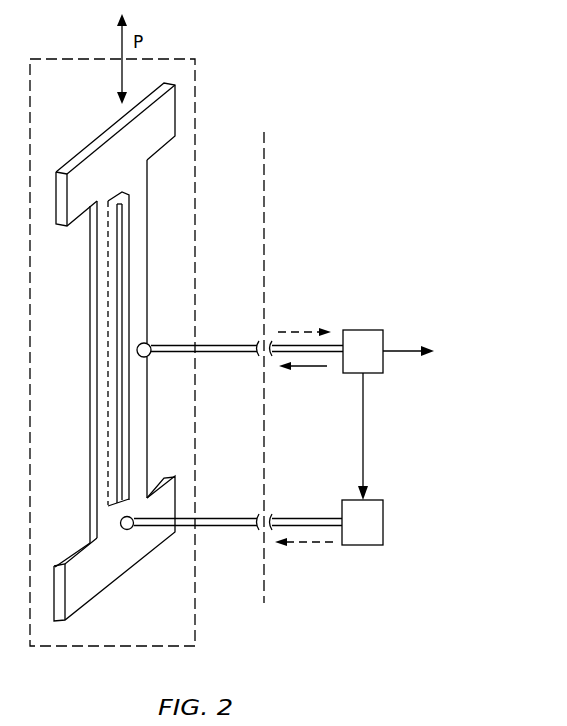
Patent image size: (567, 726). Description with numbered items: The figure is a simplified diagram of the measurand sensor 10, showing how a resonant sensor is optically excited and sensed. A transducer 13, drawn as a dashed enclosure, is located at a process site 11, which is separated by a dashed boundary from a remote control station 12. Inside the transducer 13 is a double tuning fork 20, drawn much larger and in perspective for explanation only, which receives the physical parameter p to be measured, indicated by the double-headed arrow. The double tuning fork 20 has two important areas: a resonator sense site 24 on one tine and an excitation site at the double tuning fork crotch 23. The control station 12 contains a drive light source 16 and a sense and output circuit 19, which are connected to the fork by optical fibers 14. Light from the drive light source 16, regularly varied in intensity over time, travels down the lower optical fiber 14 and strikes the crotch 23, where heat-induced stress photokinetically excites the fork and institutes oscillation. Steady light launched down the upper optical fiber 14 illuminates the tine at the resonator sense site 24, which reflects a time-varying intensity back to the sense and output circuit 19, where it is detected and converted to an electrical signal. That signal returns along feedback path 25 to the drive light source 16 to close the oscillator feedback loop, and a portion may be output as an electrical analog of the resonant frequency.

The measurand sensor 10 is at (284, 88).
The process site 11 is at (245, 163).
The control station 12 is at (322, 163).
The transducer 13 is at (195, 580).
The optical fiber 14 is at (232, 352).
The drive light source 16 is at (372, 536).
The sense and output circuit 19 is at (372, 366).
The double tuning fork 20 is at (148, 233).
The double tuning fork crotch 23 is at (132, 529).
The resonator sense site 24 is at (150, 344).
The feedback path 25 is at (365, 429).